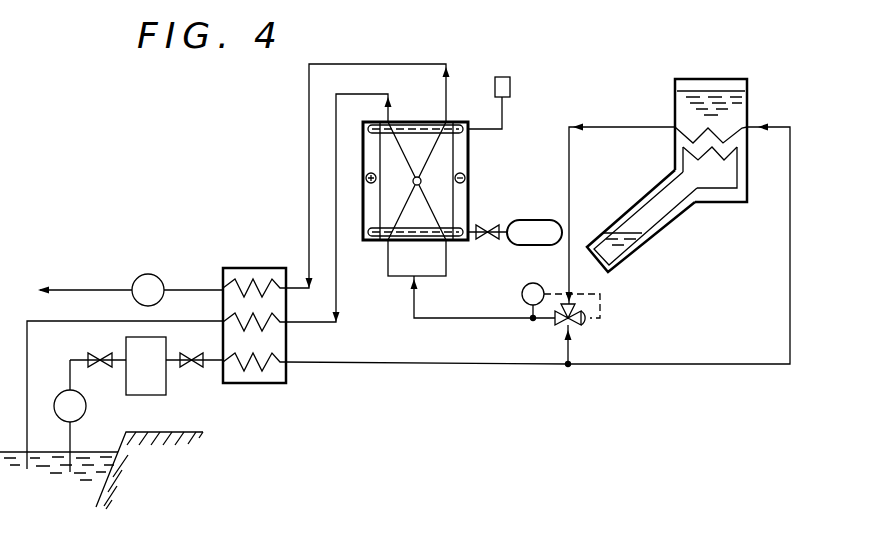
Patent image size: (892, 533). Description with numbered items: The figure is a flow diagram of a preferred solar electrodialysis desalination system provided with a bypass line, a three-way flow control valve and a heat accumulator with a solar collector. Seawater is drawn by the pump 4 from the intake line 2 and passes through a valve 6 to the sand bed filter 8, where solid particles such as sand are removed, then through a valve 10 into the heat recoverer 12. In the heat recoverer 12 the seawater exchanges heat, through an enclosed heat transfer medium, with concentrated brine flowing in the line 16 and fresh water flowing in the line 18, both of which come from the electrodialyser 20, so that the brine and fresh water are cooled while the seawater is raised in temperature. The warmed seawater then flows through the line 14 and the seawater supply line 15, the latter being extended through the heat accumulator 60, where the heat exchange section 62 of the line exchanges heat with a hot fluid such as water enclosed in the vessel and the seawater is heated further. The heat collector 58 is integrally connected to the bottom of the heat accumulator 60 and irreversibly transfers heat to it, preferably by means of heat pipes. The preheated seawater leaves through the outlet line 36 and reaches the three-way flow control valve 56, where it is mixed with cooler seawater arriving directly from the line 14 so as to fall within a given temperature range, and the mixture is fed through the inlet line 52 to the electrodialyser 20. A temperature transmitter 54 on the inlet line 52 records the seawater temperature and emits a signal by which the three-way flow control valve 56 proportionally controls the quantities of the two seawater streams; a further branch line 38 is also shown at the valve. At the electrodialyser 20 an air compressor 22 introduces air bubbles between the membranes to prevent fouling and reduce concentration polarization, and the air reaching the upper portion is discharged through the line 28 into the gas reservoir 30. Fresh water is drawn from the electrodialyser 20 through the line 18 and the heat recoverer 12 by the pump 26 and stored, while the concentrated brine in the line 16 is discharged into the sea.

The line 2 is at (72, 440).
The pump 4 is at (86, 406).
The valve 6 is at (100, 365).
The filter 8 is at (155, 395).
The valve 10 is at (188, 365).
The heat recoverer 12 is at (258, 383).
The line 14 is at (388, 363).
The seawater supply line 15 is at (645, 364).
The line 16 is at (354, 94).
The line 18 is at (377, 64).
The electrodialyser 20 is at (456, 122).
The air compressor 22 is at (547, 220).
The pump 26 is at (159, 279).
The line 28 is at (502, 122).
The gas reservoir 30 is at (512, 88).
The outlet line 36 is at (595, 127).
The line 38 is at (573, 348).
The inlet line 52 is at (468, 318).
The temperature transmitter 54 is at (535, 283).
The three-way flow control valve 56 is at (557, 322).
The heat collector 58 is at (674, 218).
The heat accumulator 60 is at (747, 91).
The heat exchange section 62 is at (720, 132).